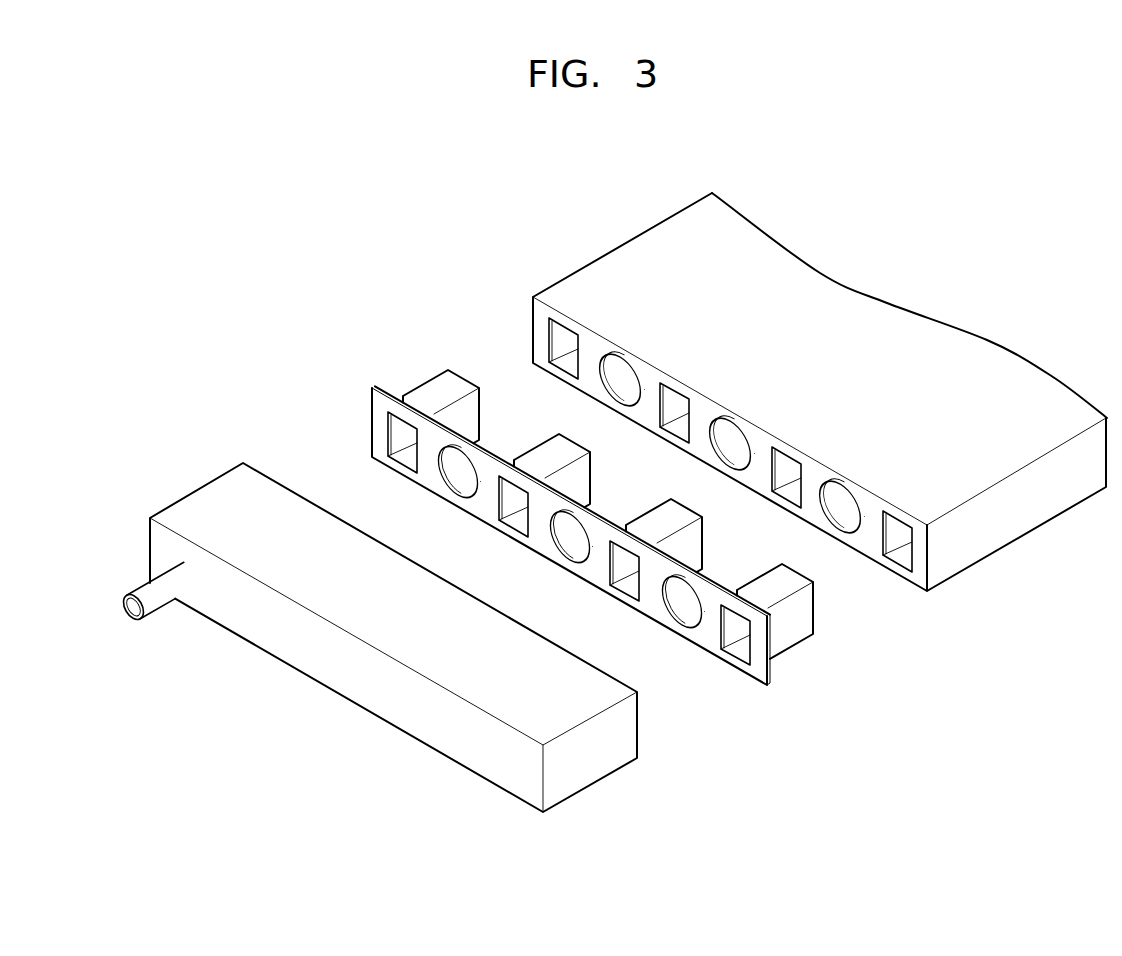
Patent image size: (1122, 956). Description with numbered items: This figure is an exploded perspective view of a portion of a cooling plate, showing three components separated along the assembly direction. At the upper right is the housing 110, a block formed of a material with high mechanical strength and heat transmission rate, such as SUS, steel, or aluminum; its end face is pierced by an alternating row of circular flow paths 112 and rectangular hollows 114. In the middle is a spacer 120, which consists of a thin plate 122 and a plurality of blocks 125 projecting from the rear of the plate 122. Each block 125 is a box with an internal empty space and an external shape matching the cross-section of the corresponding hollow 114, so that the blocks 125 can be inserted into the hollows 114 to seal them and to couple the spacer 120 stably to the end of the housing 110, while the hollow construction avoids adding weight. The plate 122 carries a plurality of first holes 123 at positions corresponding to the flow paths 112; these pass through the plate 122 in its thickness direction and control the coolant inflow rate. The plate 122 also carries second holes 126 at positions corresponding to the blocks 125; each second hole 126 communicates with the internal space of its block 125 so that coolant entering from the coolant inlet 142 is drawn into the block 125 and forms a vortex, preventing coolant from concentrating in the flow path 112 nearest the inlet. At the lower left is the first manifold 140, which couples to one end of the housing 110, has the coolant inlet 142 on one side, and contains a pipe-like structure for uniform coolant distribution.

The housing 110 is at (623, 257).
The flow path 112 is at (843, 527).
The hollow 114 is at (900, 559).
The spacer 120 is at (595, 535).
The plate 122 is at (373, 398).
The first hole 123 is at (685, 618).
The block 125 is at (430, 385).
The second hole 126 is at (390, 437).
The first manifold 140 is at (200, 495).
The coolant inlet 142 is at (145, 583).